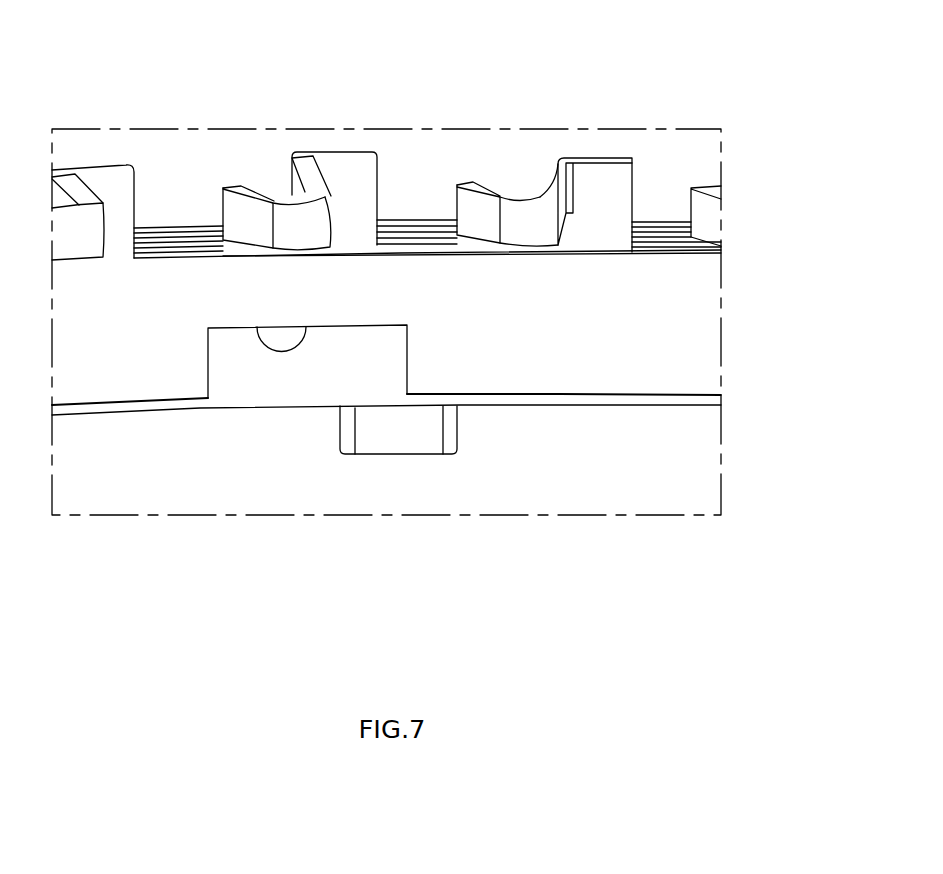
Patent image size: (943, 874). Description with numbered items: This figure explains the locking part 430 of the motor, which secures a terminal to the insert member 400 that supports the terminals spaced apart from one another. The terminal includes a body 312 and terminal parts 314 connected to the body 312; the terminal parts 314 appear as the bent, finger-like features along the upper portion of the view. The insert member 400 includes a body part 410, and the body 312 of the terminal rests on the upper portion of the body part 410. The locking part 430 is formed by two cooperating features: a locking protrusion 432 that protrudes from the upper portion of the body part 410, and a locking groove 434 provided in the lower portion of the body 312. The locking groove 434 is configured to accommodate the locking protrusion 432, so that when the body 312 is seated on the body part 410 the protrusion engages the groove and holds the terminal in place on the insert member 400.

The body 312 is at (705, 323).
The terminal parts 314 is at (617, 188).
The insert member 400 is at (667, 424).
The body part 410 is at (570, 397).
The locking part 430 is at (313, 200).
The locking protrusion 432 is at (358, 350).
The locking groove 434 is at (258, 327).